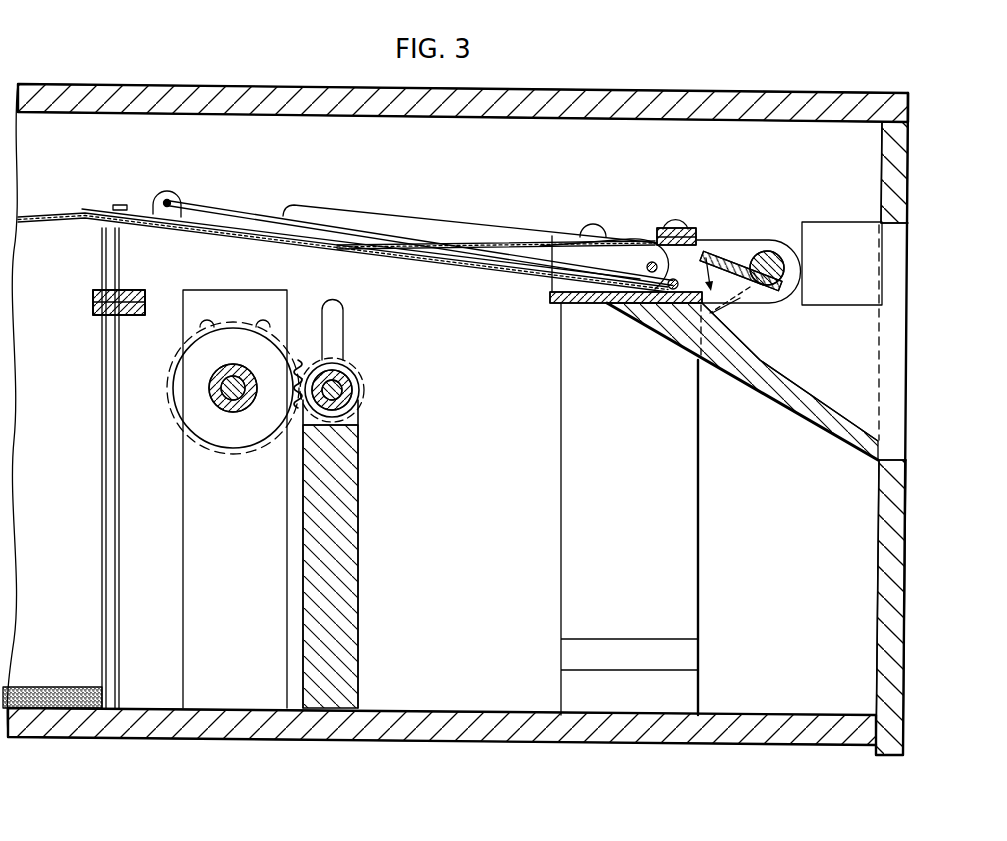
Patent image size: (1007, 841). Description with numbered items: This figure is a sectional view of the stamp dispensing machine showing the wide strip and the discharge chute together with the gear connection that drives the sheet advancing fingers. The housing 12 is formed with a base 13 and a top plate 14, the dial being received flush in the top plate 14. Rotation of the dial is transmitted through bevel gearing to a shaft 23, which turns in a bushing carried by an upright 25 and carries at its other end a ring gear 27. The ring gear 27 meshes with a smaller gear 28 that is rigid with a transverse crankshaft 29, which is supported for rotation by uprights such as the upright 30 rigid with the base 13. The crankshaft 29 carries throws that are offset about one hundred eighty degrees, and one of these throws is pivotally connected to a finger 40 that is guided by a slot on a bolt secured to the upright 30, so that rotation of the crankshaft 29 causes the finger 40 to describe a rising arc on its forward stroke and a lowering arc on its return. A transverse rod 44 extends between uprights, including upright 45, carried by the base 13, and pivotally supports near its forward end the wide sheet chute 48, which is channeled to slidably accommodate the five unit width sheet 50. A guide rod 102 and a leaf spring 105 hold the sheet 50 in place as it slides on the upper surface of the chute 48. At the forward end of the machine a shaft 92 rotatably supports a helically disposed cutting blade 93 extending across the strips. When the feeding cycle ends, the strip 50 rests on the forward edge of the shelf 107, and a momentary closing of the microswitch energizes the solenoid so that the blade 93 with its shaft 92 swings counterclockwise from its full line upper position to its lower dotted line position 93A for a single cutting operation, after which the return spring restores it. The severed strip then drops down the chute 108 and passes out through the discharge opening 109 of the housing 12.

The housing 12 is at (914, 490).
The base 13 is at (442, 720).
The top plate 14 is at (542, 90).
The shaft 23 is at (222, 391).
The upright 25 is at (186, 476).
The ring gear 27 is at (172, 378).
The smaller gear 28 is at (352, 366).
The shaft 29 is at (345, 391).
The upright 30 is at (355, 510).
The finger 40 is at (345, 316).
The transverse rod 44 is at (658, 267).
The upright 45 is at (694, 470).
The sheet chute 48 is at (141, 212).
The five unit width sheet 50 is at (48, 209).
The shaft 92 is at (790, 266).
The cutting blade 93 is at (752, 256).
The lower dotted line position 93A is at (737, 298).
The guide rod 102 is at (256, 193).
The leaf spring 105 is at (508, 243).
The shelf 107 is at (560, 304).
The chute 108 is at (770, 375).
The discharge opening 109 is at (900, 379).